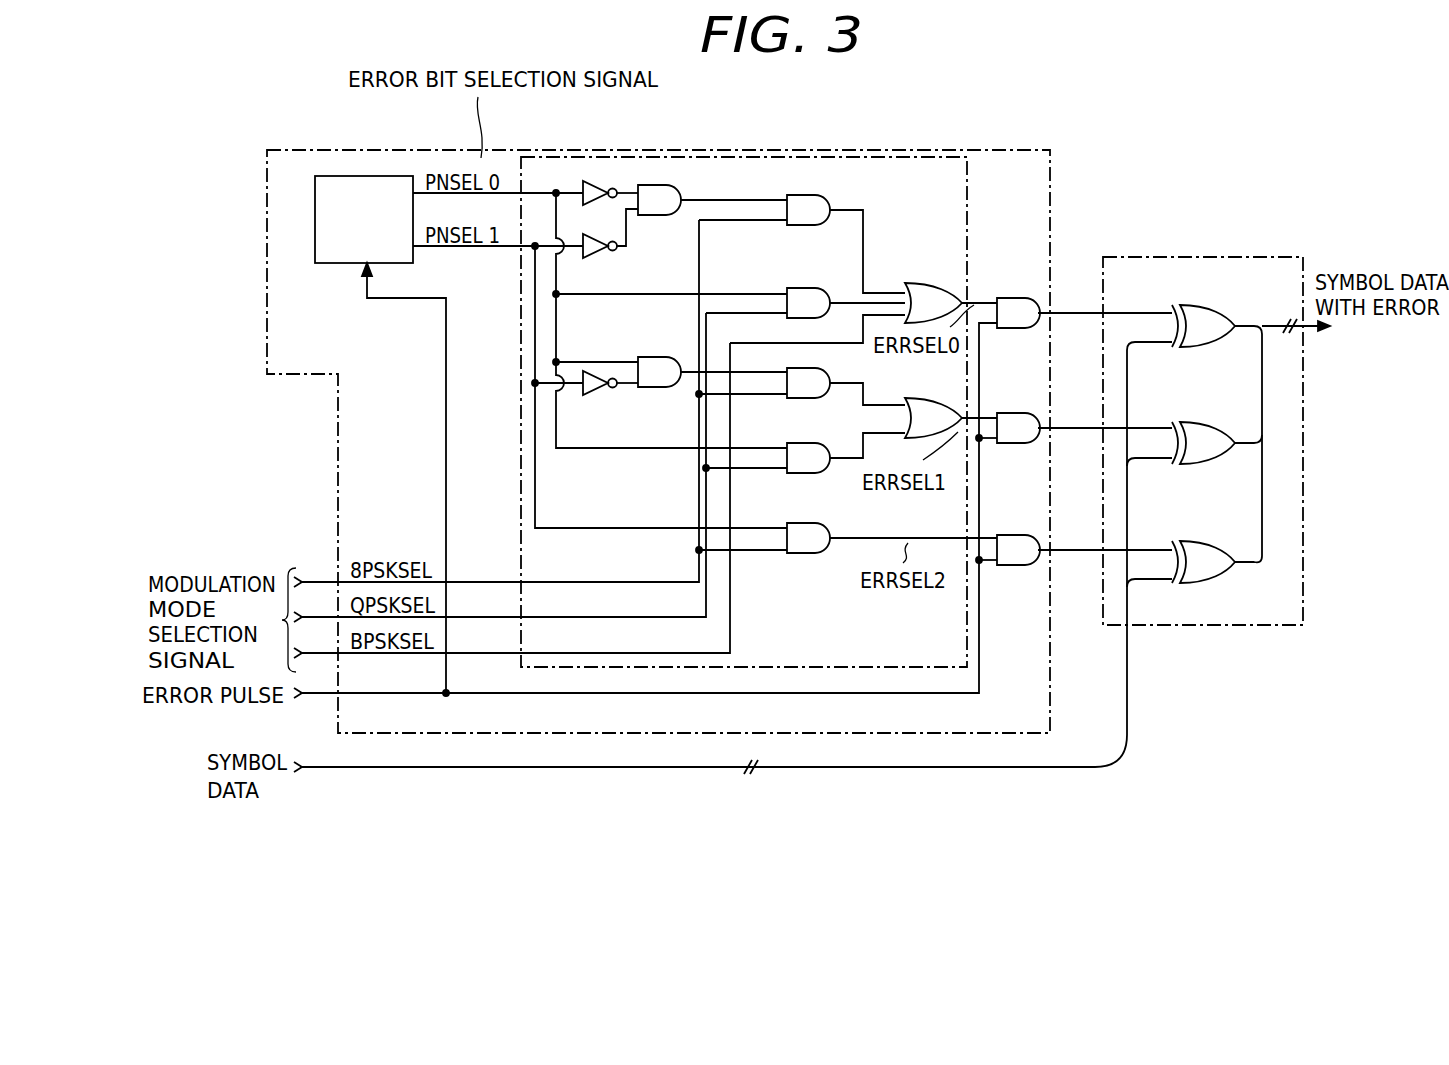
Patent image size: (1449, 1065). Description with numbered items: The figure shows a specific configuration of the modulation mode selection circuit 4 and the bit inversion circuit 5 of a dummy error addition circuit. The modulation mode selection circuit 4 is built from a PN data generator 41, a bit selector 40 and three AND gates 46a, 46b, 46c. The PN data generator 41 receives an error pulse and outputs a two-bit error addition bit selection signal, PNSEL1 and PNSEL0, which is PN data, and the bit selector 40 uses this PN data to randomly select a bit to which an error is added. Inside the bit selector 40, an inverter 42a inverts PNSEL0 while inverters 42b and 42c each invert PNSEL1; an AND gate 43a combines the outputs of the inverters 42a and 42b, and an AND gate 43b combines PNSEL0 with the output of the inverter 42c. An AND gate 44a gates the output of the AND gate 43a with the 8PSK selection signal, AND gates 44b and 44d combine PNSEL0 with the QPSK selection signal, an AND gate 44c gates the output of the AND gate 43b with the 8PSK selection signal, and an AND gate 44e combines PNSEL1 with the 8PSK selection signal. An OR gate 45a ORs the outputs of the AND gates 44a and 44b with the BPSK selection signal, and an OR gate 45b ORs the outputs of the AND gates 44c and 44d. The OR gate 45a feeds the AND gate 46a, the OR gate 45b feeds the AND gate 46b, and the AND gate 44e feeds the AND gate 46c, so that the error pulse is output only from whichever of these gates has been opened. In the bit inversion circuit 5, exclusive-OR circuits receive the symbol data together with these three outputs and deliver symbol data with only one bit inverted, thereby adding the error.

The modulation mode selection circuit 4 is at (1050, 190).
The bit selector 40 is at (967, 190).
The PN data generator 41 is at (325, 266).
The inverter 42a is at (588, 181).
The inverter 42b is at (591, 258).
The inverter 42c is at (593, 393).
The AND gate 43a is at (654, 216).
The AND gate 43b is at (654, 356).
The AND gate 44a is at (804, 227).
The AND gate 44b is at (795, 288).
The AND gate 44c is at (819, 369).
The AND gate 44d is at (819, 443).
The AND gate 44e is at (819, 523).
The OR gate 45a is at (927, 283).
The OR gate 45b is at (915, 398).
The AND gate 46a is at (1013, 298).
The AND gate 46b is at (1013, 413).
The AND gate 46c is at (1013, 535).
The bit inversion circuit 5 is at (1218, 256).